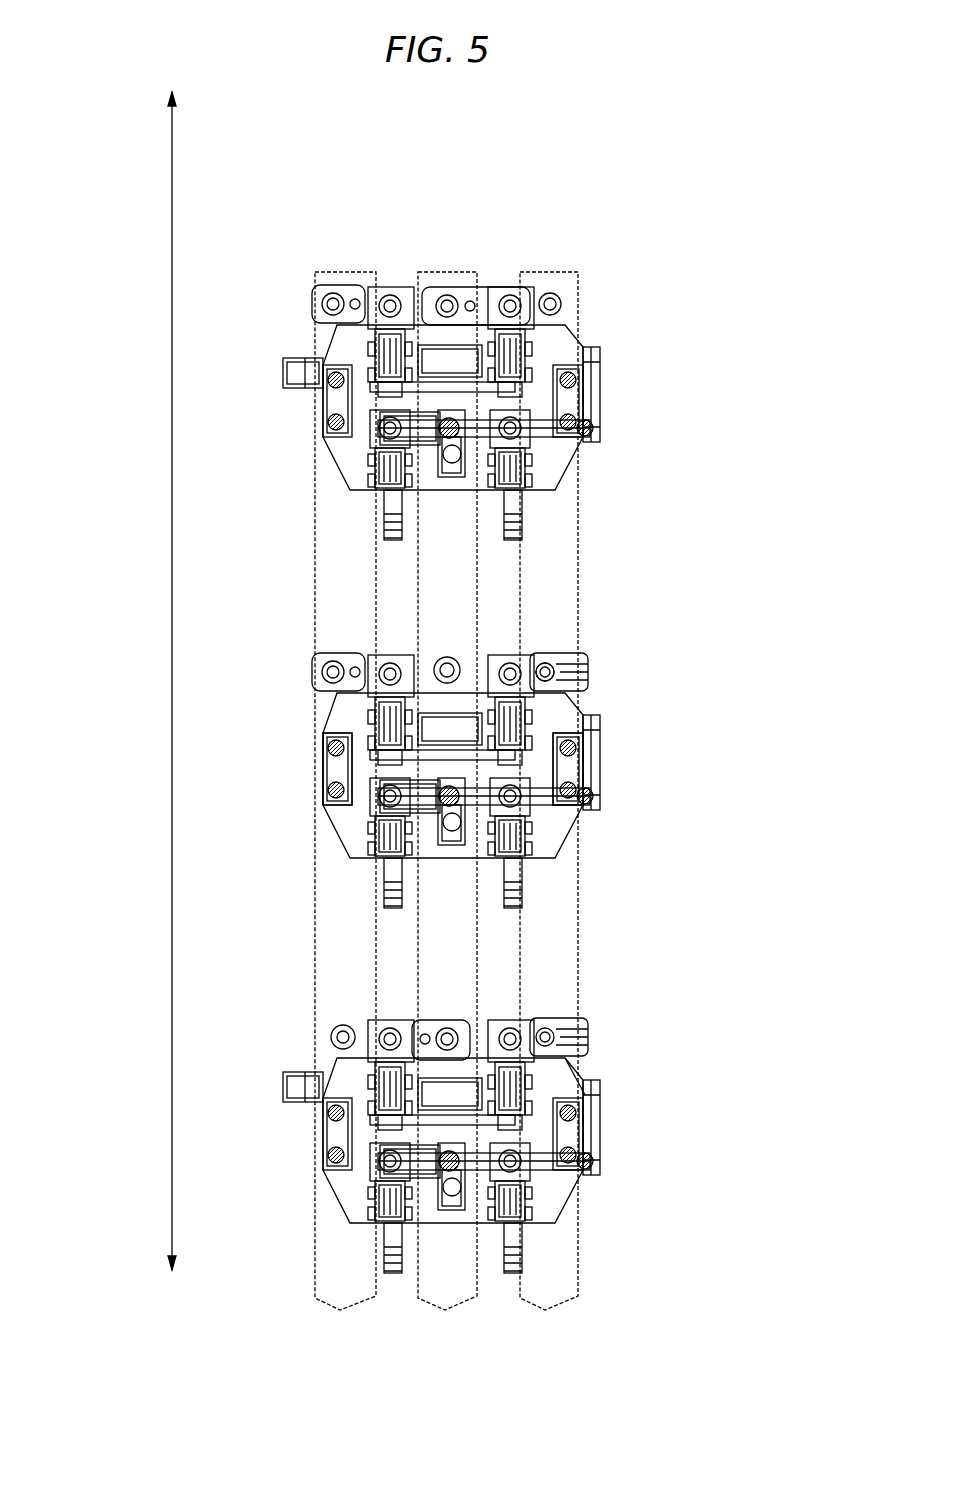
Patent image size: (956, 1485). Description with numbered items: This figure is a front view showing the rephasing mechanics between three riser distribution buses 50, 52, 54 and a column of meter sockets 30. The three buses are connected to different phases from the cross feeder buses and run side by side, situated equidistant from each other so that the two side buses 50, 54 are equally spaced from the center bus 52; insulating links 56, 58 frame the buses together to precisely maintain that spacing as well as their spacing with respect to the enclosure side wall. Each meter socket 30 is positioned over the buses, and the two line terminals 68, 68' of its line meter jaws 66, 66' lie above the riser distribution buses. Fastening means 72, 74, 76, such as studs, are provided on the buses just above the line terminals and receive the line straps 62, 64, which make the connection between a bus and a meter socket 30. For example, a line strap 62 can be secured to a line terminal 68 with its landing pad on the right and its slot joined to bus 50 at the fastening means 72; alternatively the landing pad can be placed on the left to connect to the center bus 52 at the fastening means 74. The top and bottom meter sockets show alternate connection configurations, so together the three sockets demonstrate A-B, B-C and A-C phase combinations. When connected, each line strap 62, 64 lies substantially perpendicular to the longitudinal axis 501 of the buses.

The longitudinal axis 501 is at (172, 683).
The riser distribution bus 50 is at (548, 272).
The center riser distribution bus 52 is at (441, 294).
The riser distribution bus 54 is at (348, 292).
The insulating link 56 is at (283, 375).
The insulating link 58 is at (283, 1090).
The meter socket 30 is at (555, 352).
The line terminal 68 is at (580, 574).
The line terminal 68' is at (332, 574).
The fastening means 74 is at (440, 662).
The fastening means 76 is at (318, 670).
The line strap 62 is at (585, 660).
The fastening means 72 is at (555, 675).
The line meter jaw 66 is at (616, 769).
The line meter jaw 66' is at (309, 770).
The line strap 64 is at (470, 1023).